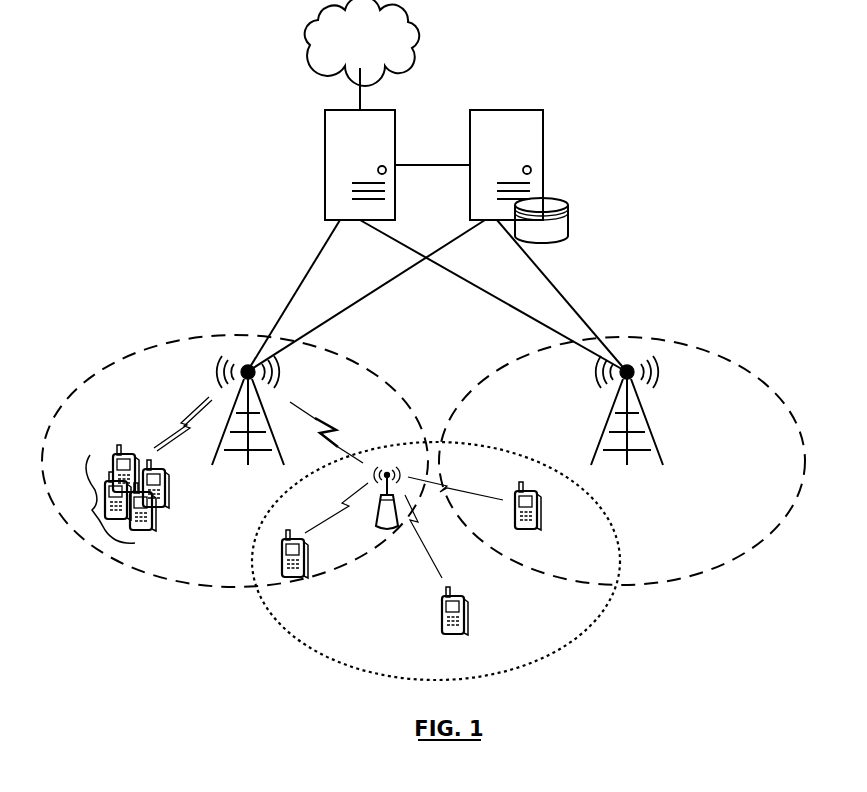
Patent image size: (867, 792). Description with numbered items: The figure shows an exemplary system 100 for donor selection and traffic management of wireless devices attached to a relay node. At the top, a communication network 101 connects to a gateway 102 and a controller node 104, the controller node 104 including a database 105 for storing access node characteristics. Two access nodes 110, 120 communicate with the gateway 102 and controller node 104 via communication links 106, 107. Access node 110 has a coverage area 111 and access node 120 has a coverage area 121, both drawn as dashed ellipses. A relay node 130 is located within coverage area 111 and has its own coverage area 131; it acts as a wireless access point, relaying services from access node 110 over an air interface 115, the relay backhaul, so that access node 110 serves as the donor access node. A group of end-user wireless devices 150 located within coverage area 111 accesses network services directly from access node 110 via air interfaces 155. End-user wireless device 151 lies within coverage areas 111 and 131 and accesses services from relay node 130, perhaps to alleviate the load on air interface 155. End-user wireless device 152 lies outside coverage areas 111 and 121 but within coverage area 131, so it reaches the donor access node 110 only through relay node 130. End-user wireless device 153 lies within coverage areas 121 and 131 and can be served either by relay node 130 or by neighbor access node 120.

The system 100 is at (512, 53).
The communication network 101 is at (379, 44).
The gateway 102 is at (328, 165).
The controller node 104 is at (540, 165).
The database 105 is at (575, 220).
The communication link 106 is at (481, 296).
The communication link 107 is at (366, 296).
The access node 110 is at (218, 386).
The coverage area 111 is at (229, 461).
The air interface 115 is at (339, 432).
The access node 120 is at (657, 385).
The coverage area 121 is at (627, 461).
The relay node 130 is at (419, 488).
The coverage area 131 is at (417, 561).
The end-user wireless devices 150 is at (100, 494).
The end-user wireless device 151 is at (265, 554).
The end-user wireless device 152 is at (420, 620).
The end-user wireless device 153 is at (562, 515).
The air interface 155 is at (161, 416).